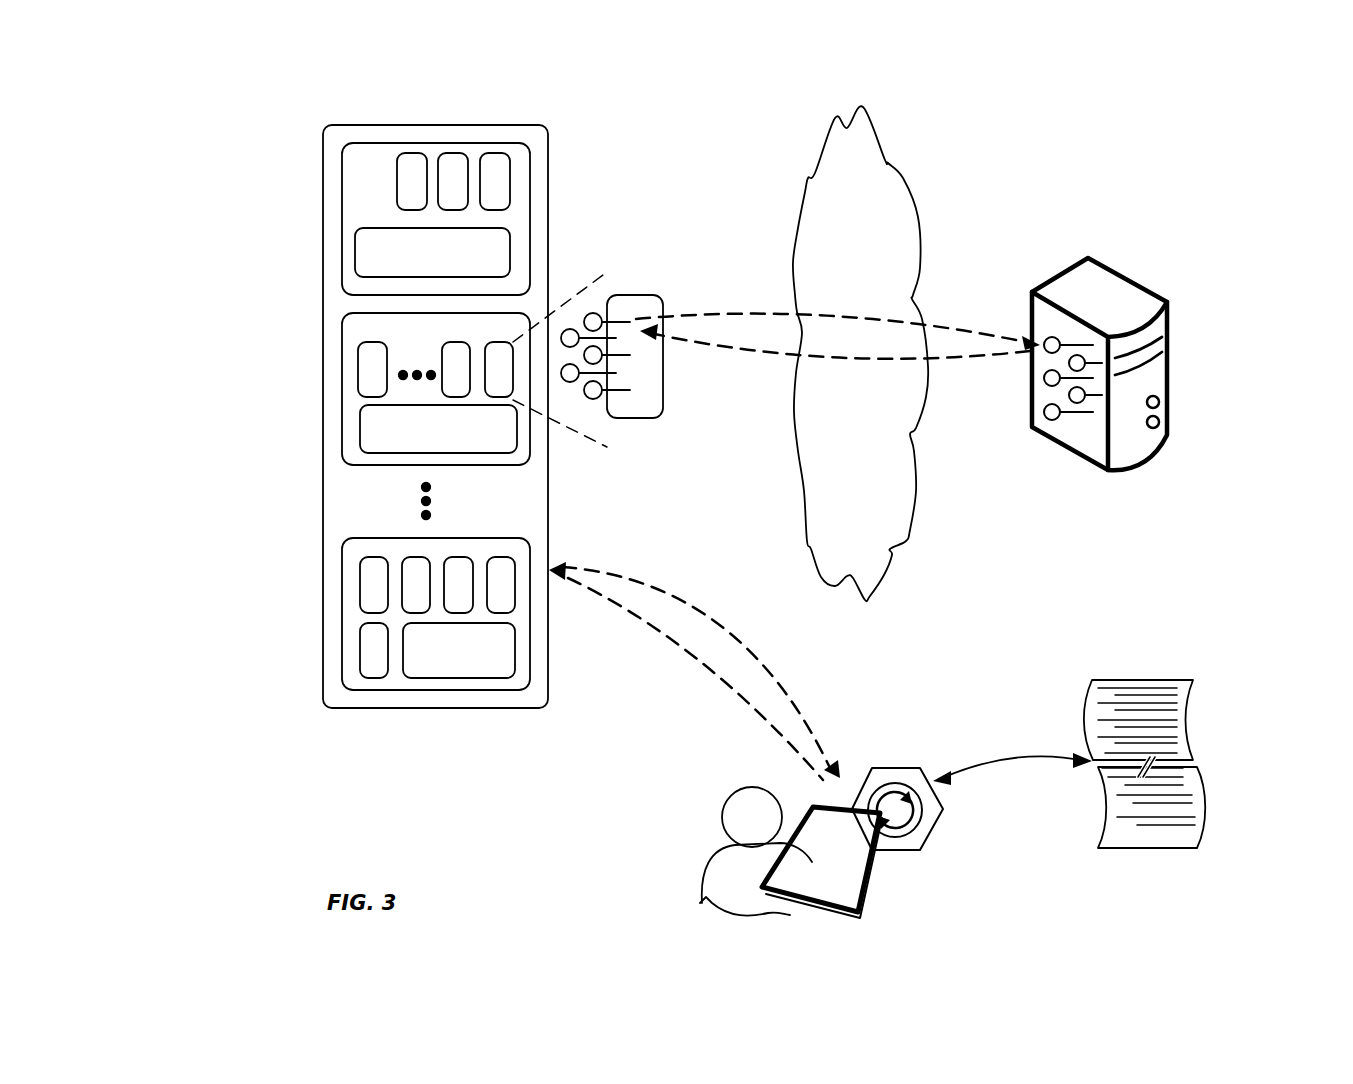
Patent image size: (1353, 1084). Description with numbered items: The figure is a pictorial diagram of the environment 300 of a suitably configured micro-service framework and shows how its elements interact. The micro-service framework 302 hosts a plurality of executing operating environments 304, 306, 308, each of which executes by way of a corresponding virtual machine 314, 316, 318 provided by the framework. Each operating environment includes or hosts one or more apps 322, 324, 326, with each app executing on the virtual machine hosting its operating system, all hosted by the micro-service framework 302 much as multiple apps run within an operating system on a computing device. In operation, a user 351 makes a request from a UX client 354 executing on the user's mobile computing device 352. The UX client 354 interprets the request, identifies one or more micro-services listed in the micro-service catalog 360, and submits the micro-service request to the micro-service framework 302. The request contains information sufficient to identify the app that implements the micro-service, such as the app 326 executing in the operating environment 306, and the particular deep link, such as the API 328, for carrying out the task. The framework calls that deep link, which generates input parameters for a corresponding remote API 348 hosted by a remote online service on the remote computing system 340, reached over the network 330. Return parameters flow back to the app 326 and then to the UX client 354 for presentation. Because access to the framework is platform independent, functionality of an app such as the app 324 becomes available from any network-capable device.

The environment 300 is at (186, 141).
The micro-service framework 302 is at (548, 150).
The operating environment 304 is at (343, 283).
The operating environment 306 is at (342, 340).
The operating environment 308 is at (343, 670).
The virtual machine 314 is at (357, 231).
The virtual machine 316 is at (360, 432).
The virtual machine 318 is at (512, 632).
The app 322 is at (360, 380).
The app 324 is at (397, 183).
The app 326 is at (663, 395).
The API 328 is at (360, 577).
The network 330 is at (908, 537).
The remote computing system 340 is at (1170, 345).
The remote API 348 is at (1068, 327).
The user 351 is at (702, 872).
The mobile computing device 352 is at (876, 868).
The UX client 354 is at (936, 823).
The micro-service catalog 360 is at (1186, 752).